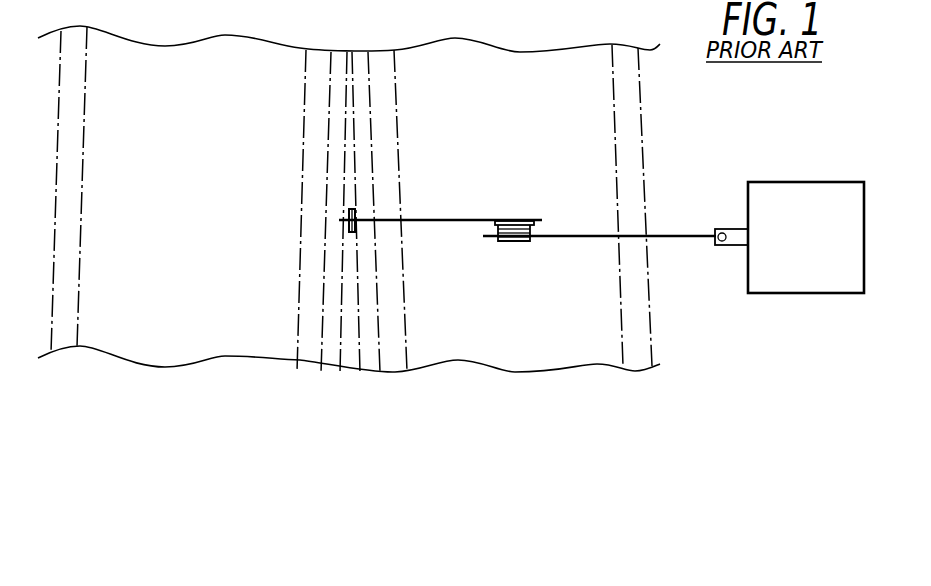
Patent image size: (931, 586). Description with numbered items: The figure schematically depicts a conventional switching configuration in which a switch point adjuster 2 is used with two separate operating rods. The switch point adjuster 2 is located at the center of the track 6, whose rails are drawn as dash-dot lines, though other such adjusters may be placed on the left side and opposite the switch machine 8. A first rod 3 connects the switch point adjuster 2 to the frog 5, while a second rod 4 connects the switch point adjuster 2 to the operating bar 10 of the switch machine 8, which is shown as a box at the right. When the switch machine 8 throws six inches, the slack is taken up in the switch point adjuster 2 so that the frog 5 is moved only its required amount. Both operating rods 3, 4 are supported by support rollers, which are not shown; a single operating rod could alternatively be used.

The switch point adjuster 2 is at (512, 243).
The first rod 3 is at (453, 218).
The second rod 4 is at (667, 240).
The frog 5 is at (350, 232).
The track 6 is at (402, 347).
The switch machine 8 is at (838, 182).
The operating bar 10 is at (731, 229).